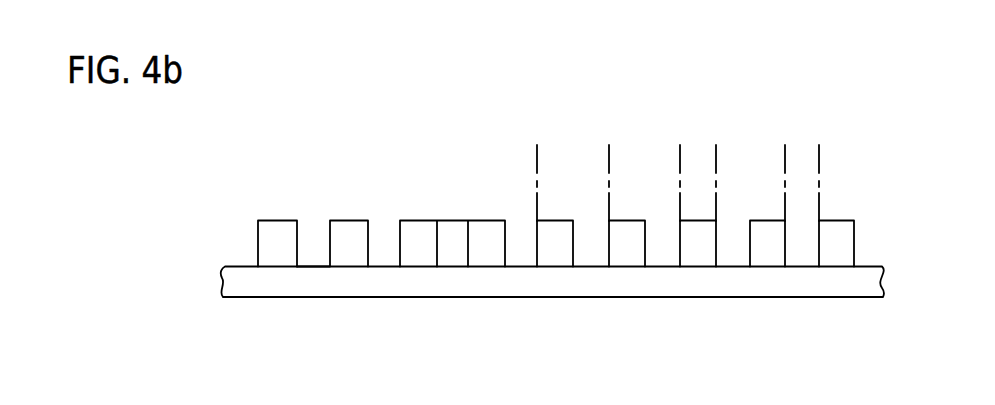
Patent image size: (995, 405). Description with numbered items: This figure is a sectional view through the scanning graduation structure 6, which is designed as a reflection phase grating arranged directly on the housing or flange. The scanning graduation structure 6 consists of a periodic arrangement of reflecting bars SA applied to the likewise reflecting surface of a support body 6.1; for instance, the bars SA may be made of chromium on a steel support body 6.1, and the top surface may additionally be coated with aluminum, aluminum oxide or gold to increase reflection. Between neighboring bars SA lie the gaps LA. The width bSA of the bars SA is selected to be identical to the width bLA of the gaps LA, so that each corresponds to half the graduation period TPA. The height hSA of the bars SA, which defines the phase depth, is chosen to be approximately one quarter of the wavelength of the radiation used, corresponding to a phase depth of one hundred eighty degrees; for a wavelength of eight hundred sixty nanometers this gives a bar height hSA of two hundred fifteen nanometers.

The scanning graduation structure 6 is at (208, 287).
The support body 6.1 is at (385, 283).
The reflecting bars SA is at (283, 235).
The gaps LA is at (313, 242).
The bar height hSA is at (452, 221).
The graduation period TPA is at (609, 158).
The bar width bSA is at (647, 158).
The gap width bLA is at (765, 158).